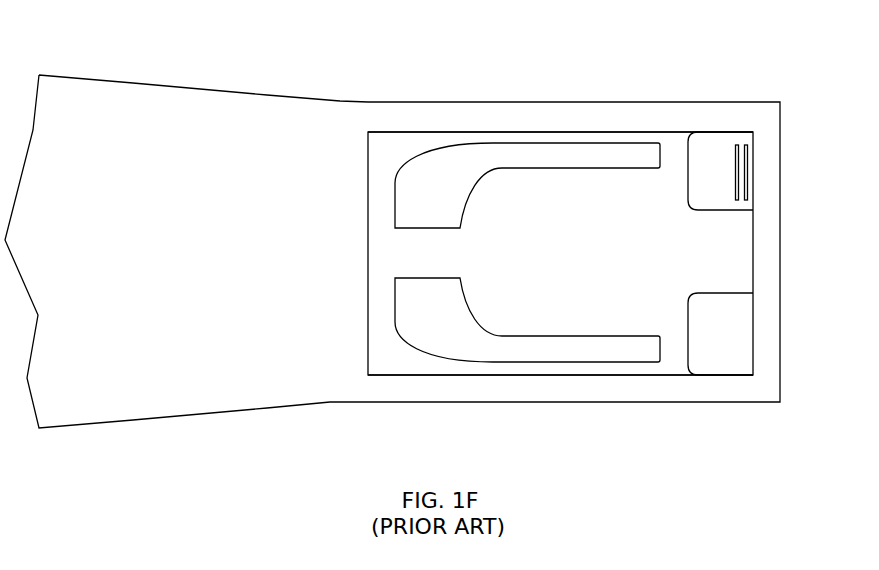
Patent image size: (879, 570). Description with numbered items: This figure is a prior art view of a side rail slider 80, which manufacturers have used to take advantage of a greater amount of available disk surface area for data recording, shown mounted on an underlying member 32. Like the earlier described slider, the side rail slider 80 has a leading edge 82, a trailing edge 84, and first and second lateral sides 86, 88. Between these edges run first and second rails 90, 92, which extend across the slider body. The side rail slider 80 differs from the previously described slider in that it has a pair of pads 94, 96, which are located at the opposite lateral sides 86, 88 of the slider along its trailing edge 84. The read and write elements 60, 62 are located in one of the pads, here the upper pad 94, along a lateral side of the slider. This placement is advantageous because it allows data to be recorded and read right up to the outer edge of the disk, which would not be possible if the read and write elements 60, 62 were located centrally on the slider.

The substrate 32 is at (211, 178).
The side rail slider 80 is at (462, 112).
The leading edge 82 is at (368, 252).
The trailing edge 84 is at (753, 248).
The first lateral side 86 is at (497, 132).
The second lateral side 88 is at (600, 377).
The first rail 90 is at (555, 160).
The second rail 92 is at (555, 347).
The pad 94 is at (718, 138).
The pad 96 is at (718, 363).
The read element 60 is at (737, 201).
The write element 62 is at (746, 201).